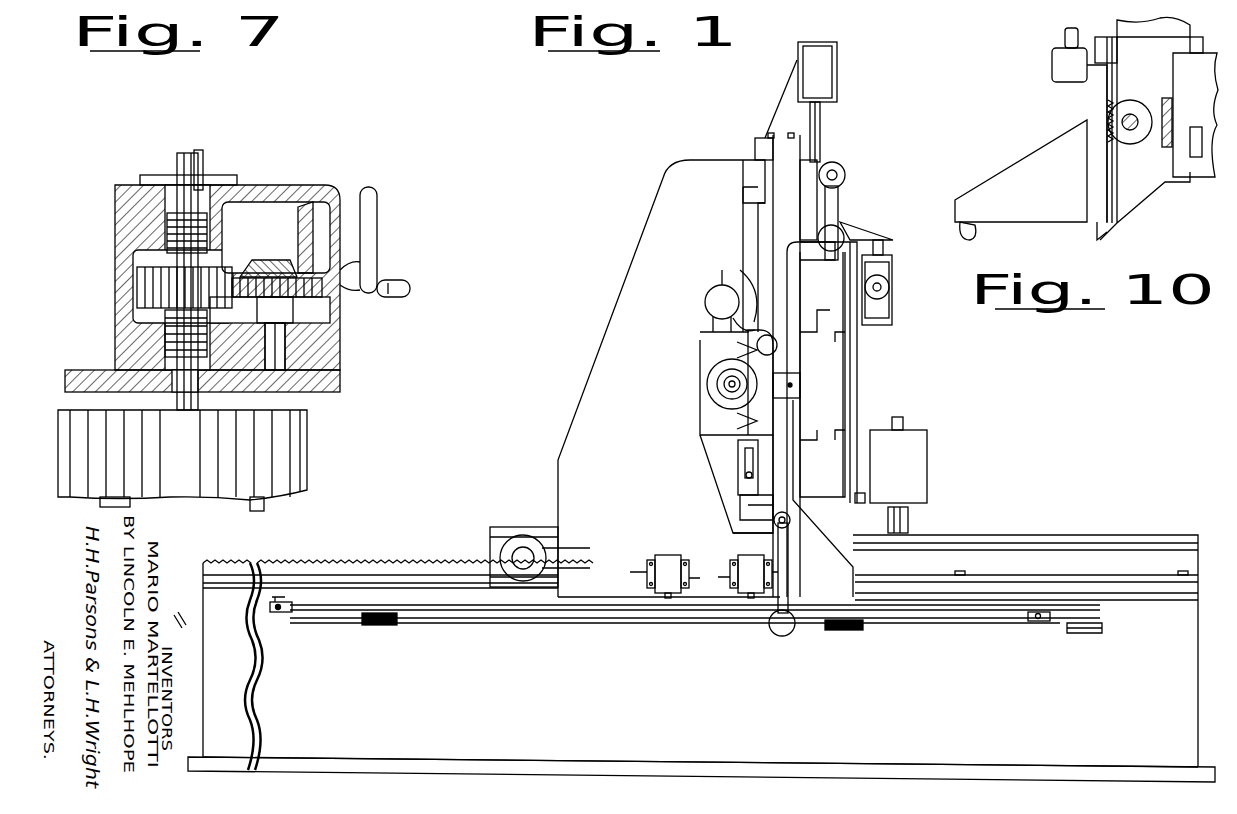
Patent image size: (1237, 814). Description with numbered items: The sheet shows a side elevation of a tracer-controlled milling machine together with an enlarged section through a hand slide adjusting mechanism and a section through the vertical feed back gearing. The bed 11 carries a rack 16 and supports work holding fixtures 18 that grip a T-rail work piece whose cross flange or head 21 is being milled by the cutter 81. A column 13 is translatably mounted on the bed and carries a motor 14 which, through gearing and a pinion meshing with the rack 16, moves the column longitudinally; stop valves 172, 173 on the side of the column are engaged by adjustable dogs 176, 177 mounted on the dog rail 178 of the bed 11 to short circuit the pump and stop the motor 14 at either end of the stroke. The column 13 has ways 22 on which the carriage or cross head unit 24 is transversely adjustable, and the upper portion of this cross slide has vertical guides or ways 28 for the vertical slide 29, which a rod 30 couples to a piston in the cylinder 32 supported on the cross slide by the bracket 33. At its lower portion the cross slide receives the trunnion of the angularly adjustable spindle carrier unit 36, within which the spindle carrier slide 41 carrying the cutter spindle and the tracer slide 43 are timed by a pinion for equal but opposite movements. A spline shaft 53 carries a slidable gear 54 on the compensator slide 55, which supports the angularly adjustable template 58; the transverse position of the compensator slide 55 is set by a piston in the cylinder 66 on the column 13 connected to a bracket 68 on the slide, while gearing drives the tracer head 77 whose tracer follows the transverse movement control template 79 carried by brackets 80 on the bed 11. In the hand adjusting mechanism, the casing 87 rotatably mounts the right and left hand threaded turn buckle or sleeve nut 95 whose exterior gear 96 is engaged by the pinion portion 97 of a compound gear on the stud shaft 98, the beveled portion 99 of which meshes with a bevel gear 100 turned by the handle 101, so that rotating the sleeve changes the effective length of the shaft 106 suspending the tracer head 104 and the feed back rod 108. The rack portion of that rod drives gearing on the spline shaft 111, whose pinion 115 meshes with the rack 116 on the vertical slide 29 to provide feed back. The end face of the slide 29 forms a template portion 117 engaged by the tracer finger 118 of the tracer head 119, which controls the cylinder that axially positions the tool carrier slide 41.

In FIG. 1, the bed 11 is at (210, 622).
In FIG. 1, the column 13 is at (572, 420).
In FIG. 1, the motor 14 is at (522, 535).
In FIG. 1, the rack 16 is at (252, 560).
In FIG. 1, the work holding clamps or fixtures 18 is at (490, 550).
In FIG. 1, the cross flange or head 21 is at (1090, 532).
In FIG. 1, the ways 22 is at (742, 165).
In FIG. 10, the ways 22 is at (1180, 62).
In FIG. 1, the carriage or cross head unit 24 is at (757, 140).
In FIG. 10, the vertical guides or ways 28 is at (1107, 37).
In FIG. 1, the vertical slide 29 is at (803, 200).
In FIG. 10, the vertical slide 29 is at (1087, 118).
In FIG. 1, the rod 30 is at (825, 121).
In FIG. 10, the rod 30 is at (1065, 40).
In FIG. 1, the cylinder 32 is at (838, 75).
In FIG. 1, the bracket 33 is at (782, 72).
In FIG. 10, the bracket 33 is at (1183, 32).
In FIG. 1, the spindle carrier unit 36 is at (832, 382).
In FIG. 1, the spindle carrier slide 41 is at (858, 503).
In FIG. 1, the tracer slide 43 is at (832, 252).
In FIG. 1, the spline shaft 53 is at (725, 392).
In FIG. 1, the gear 54 is at (708, 380).
In FIG. 1, the compensator slide 55 is at (752, 436).
In FIG. 1, the angularly adjustable template 58 is at (840, 215).
In FIG. 1, the cylinder 66 is at (708, 296).
In FIG. 1, the bracket 68 is at (748, 278).
In FIG. 1, the tracer head 77 is at (782, 636).
In FIG. 1, the transverse movement control template 79 is at (470, 626).
In FIG. 1, the brackets 80 is at (612, 628).
In FIG. 1, the cutter 81 is at (910, 520).
In FIG. 7, the casing 87 is at (258, 195).
In FIG. 7, the turn buckle or sleeve nut 95 is at (205, 267).
In FIG. 7, the exterior gear 96 is at (226, 314).
In FIG. 7, the pinion portion 97 is at (289, 333).
In FIG. 7, the stud shaft 98 is at (280, 350).
In FIG. 7, the beveled portion 99 is at (282, 264).
In FIG. 7, the bevel gear 100 is at (300, 234).
In FIG. 7, the handle 101 is at (412, 288).
In FIG. 7, the tracer head 104 is at (266, 506).
In FIG. 7, the shaft 106 is at (200, 408).
In FIG. 7, the feed back rod 108 is at (172, 170).
In FIG. 10, the spline shaft 111 is at (1130, 133).
In FIG. 10, the pinion 115 is at (1130, 103).
In FIG. 10, the rack 116 is at (1108, 110).
In FIG. 1, the template portion 117 is at (880, 226).
In FIG. 10, the template portion 117 is at (1047, 222).
In FIG. 1, the tracer finger 118 is at (885, 252).
In FIG. 10, the tracer finger 118 is at (978, 235).
In FIG. 1, the tracer head 119 is at (890, 312).
In FIG. 1, the stop valve 172 is at (652, 556).
In FIG. 1, the stop valve 173 is at (732, 556).
In FIG. 1, the adjustable dog 176 is at (290, 600).
In FIG. 1, the adjustable dog 177 is at (1048, 610).
In FIG. 1, the dog rail 178 is at (322, 618).